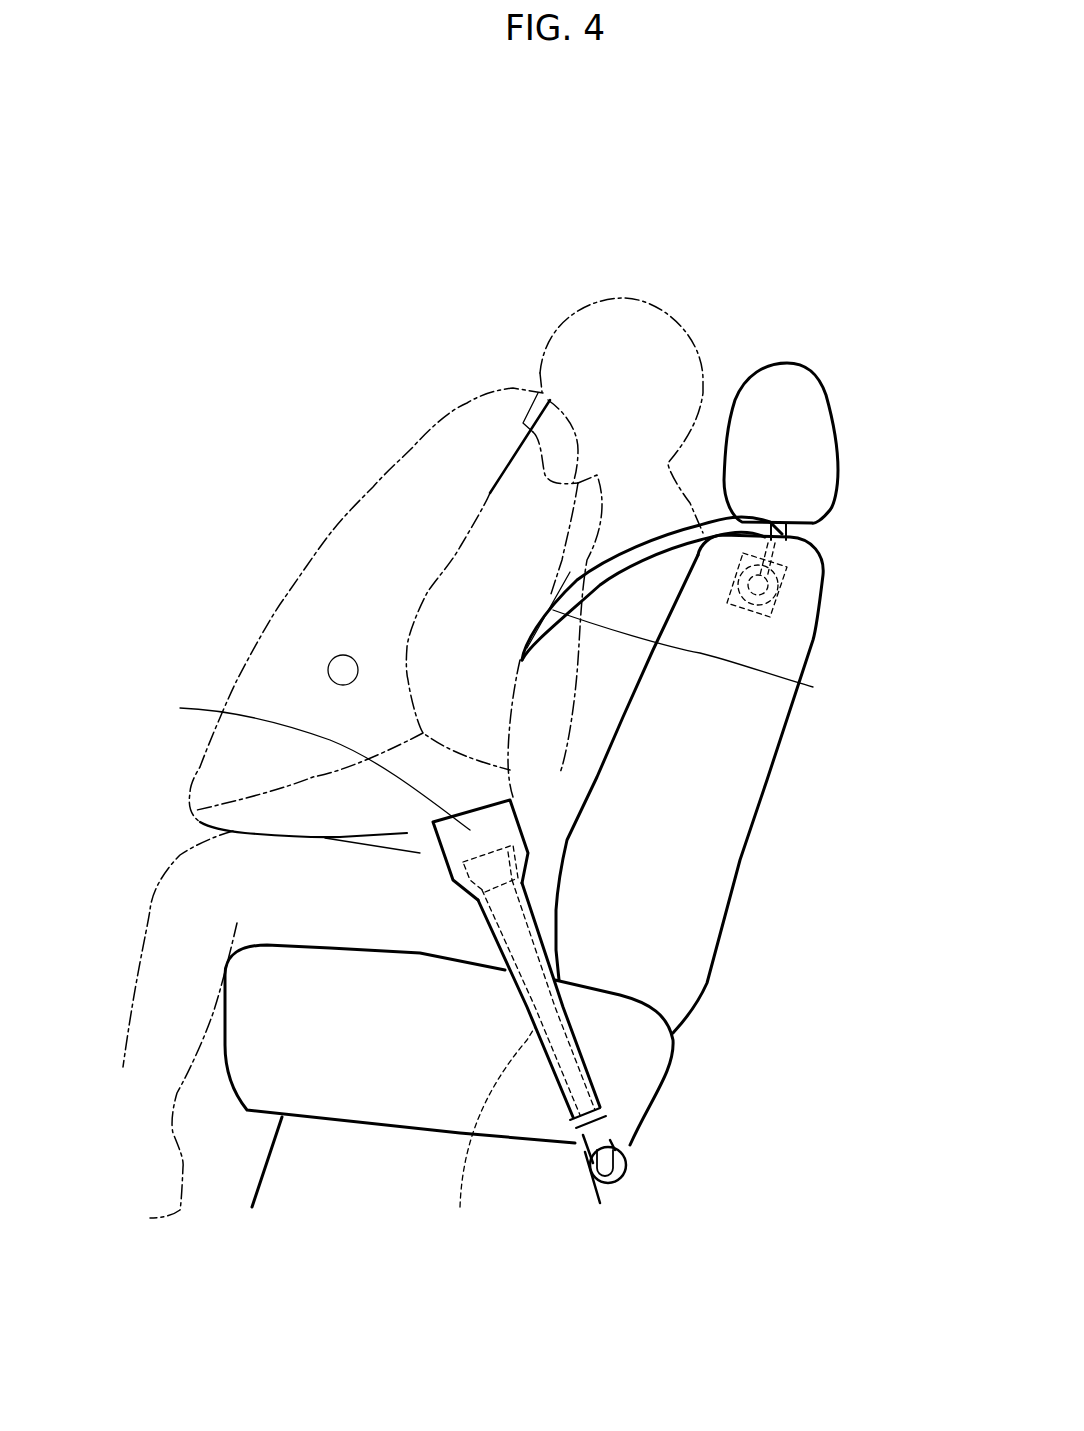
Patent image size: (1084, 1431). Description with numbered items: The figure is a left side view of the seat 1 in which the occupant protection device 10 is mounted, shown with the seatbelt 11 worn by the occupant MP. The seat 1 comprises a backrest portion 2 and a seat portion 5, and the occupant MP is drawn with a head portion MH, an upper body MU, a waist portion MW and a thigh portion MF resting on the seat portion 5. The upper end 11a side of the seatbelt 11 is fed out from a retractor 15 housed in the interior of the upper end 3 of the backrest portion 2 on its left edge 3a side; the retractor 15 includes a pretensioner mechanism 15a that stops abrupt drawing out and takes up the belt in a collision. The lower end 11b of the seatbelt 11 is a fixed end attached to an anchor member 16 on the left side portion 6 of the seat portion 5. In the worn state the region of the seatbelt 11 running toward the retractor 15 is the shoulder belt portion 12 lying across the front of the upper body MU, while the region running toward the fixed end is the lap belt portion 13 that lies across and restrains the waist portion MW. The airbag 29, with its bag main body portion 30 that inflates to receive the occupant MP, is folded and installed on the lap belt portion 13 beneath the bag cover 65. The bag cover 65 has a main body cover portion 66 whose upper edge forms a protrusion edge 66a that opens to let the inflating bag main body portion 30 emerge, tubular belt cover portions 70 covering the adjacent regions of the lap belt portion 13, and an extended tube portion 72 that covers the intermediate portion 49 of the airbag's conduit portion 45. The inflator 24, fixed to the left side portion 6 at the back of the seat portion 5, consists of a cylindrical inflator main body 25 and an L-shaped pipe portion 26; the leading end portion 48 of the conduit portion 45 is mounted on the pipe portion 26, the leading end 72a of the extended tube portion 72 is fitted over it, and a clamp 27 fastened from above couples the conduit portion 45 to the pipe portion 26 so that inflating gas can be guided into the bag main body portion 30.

The seat 1 is at (567, 820).
The backrest portion 2 is at (735, 822).
The upper end 3 is at (817, 451).
The left edge 3a is at (815, 537).
The seat portion 5 is at (657, 1052).
The left side portion 6 is at (345, 1073).
The occupant protection device 10 is at (515, 832).
The seatbelt 11 is at (706, 485).
The upper end 11a is at (778, 515).
The lower end 11b is at (467, 1134).
The shoulder belt portion 12 is at (702, 660).
The lap belt portion 13 is at (515, 928).
The retractor 15 is at (826, 588).
The pretensioner mechanism 15a is at (780, 593).
The anchor member 16 is at (497, 1117).
The inflator 24 is at (693, 1181).
The inflator main body 25 is at (627, 1180).
The pipe portion 26 is at (633, 1152).
The clamp 27 is at (590, 1120).
The airbag 29 is at (413, 415).
The bag main body portion 30 is at (369, 535).
The conduit portion 45 is at (580, 1073).
The leading end portion 48 is at (582, 1145).
The intermediate portion 49 is at (730, 1051).
The bag cover 65 is at (287, 762).
The main body cover portion 66 is at (402, 986).
The protrusion edge 66a is at (518, 796).
The belt cover portion 70 is at (462, 876).
The extended tube portion 72 is at (548, 1080).
The leading end 72a is at (589, 1222).
The occupant MP is at (464, 706).
The head portion MH is at (615, 325).
The upper body MU is at (537, 683).
The waist portion MW is at (530, 832).
The thigh portion MF is at (327, 922).